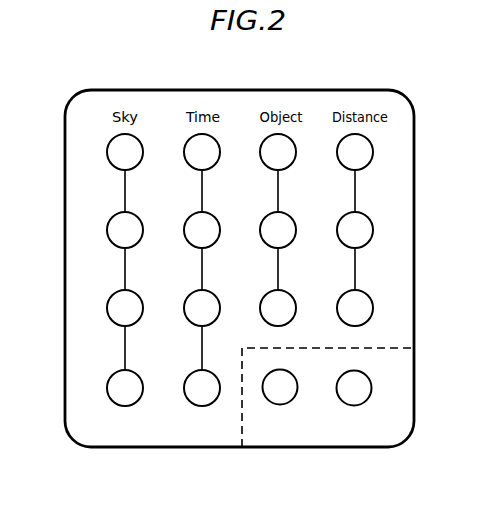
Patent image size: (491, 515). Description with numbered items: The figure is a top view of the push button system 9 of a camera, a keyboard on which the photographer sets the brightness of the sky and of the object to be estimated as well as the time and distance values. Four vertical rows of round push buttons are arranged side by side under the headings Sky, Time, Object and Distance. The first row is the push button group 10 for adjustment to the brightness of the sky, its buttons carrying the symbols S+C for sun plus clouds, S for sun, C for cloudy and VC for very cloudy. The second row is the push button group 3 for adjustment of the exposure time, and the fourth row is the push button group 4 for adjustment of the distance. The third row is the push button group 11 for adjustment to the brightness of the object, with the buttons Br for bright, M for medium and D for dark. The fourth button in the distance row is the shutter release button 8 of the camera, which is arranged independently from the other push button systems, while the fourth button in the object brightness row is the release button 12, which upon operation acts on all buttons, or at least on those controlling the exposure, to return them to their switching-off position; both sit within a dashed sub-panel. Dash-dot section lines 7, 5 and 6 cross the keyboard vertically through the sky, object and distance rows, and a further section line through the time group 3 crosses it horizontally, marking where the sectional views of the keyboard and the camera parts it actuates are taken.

The push button group 3 is at (203, 270).
The push button group 4 is at (356, 267).
The section line 5— 5 is at (264, 484).
The section line 6— 6 is at (376, 484).
The section line 7— 7 is at (122, 484).
The shutter release button 8 is at (368, 377).
The push button system 9 is at (413, 203).
The push button group 10 is at (125, 343).
The push button group 11 is at (278, 197).
The release button 12 is at (268, 376).